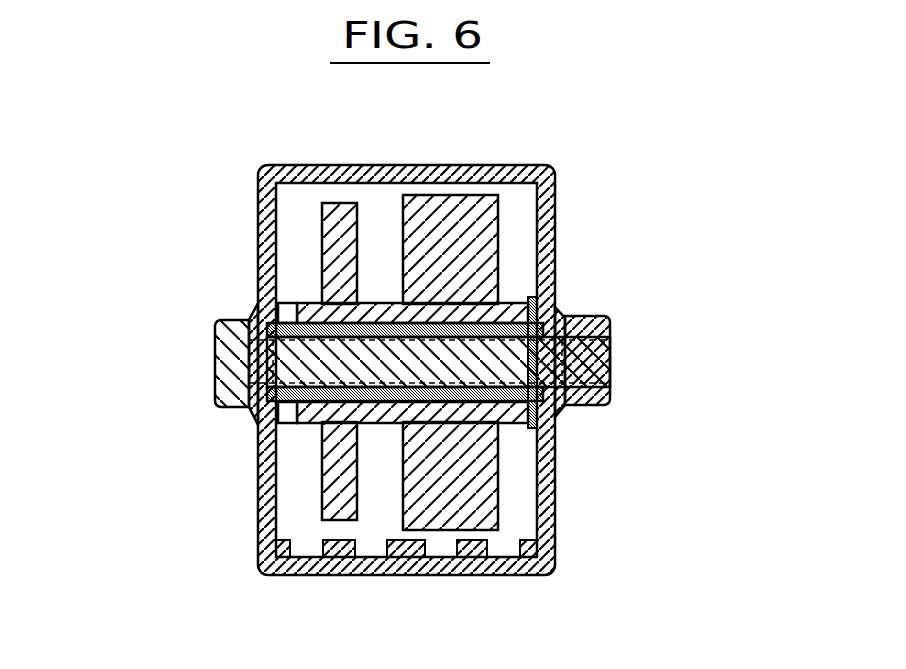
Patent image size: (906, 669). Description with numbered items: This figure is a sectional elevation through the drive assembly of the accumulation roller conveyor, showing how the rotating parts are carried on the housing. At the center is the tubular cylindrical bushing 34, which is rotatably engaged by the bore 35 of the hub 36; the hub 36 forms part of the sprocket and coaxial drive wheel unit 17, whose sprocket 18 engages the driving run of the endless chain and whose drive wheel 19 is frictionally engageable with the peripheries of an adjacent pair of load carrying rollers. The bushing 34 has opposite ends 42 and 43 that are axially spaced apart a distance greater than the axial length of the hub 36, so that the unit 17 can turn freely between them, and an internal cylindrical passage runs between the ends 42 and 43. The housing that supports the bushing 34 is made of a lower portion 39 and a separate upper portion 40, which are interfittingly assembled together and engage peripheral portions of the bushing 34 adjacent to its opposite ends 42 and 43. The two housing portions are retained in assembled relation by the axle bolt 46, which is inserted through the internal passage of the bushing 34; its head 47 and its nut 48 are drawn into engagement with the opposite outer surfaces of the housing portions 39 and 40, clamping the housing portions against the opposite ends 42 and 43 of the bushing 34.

The sprocket and coaxial drive wheel unit 17 is at (506, 200).
The sprocket 18 is at (328, 203).
The drive wheel 19 is at (435, 195).
The tubular cylindrical bushing 34 is at (295, 308).
The bore 35 is at (317, 422).
The hub 36 is at (320, 412).
The lower portion 39 is at (562, 575).
The upper portion 40 is at (560, 161).
The end 42 is at (250, 322).
The end 43 is at (556, 306).
The axle bolt 46 is at (610, 362).
The head 47 is at (214, 348).
The nut 48 is at (608, 318).